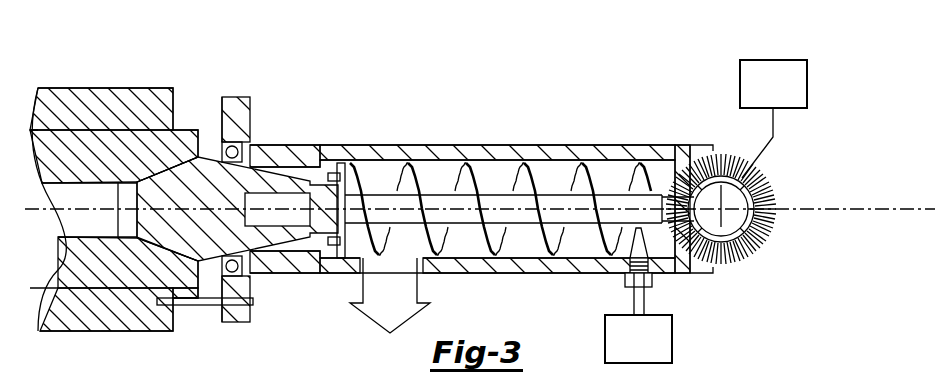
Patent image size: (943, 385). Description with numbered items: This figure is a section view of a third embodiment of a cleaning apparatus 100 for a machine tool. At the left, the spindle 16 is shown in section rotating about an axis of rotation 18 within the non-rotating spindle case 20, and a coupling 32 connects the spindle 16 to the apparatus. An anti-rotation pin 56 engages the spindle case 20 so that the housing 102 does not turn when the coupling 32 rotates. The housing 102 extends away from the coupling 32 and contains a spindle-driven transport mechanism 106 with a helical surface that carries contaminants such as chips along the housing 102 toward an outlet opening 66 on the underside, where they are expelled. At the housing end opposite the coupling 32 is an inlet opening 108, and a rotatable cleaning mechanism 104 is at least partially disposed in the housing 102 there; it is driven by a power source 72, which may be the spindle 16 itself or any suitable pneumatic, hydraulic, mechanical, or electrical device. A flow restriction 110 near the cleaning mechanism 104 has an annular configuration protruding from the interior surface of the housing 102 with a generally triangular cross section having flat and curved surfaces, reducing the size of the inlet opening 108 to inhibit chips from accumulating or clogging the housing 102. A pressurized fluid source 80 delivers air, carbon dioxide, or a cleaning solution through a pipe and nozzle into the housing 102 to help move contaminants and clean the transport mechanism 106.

The spindle 16 is at (97, 142).
The axis of rotation 18 is at (36, 214).
The spindle case 20 is at (138, 331).
The coupling 32 is at (208, 137).
The anti-rotation pin 56 is at (196, 306).
The outlet opening 66 is at (382, 263).
The power source 72 is at (782, 58).
The pressurized fluid source 80 is at (606, 322).
The cleaning apparatus 100 is at (534, 162).
The housing 102 is at (412, 143).
The cleaning mechanism 104 is at (777, 174).
The transport mechanism 106 is at (503, 160).
The inlet opening 108 is at (725, 146).
The flow restriction 110 is at (700, 145).